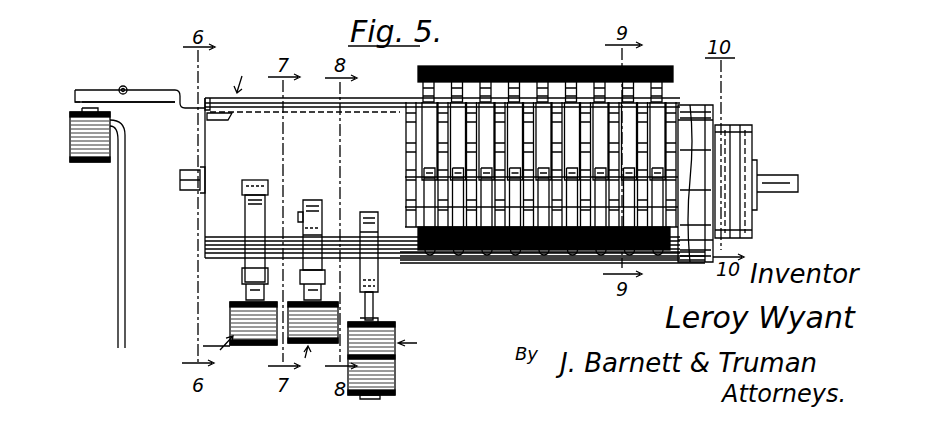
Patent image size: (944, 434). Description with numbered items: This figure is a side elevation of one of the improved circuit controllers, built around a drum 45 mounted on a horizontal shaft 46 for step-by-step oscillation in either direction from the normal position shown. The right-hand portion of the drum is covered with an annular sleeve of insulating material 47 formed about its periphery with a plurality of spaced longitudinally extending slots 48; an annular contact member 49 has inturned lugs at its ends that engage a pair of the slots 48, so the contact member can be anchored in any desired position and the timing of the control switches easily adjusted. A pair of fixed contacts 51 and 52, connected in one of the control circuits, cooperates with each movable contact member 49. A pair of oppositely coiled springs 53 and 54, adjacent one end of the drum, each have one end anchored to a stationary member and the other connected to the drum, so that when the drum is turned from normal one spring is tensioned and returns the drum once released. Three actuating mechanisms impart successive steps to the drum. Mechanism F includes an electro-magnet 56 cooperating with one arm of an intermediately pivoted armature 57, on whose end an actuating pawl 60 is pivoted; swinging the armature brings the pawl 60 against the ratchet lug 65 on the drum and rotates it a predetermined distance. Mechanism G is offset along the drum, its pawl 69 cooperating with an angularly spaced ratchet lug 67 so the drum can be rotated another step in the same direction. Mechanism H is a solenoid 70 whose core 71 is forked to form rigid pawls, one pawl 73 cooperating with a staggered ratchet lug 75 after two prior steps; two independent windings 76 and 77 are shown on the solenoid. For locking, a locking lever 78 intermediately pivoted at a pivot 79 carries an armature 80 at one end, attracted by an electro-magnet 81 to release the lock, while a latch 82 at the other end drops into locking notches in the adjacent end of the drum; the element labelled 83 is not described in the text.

The drum 45 is at (301, 112).
The horizontal shaft 46 is at (180, 176).
The annular sleeve of insulating material 47 is at (718, 122).
The longitudinally extending slots 48 is at (700, 123).
The annular contact member 49 is at (497, 122).
The fixed contact 51 is at (536, 84).
The fixed contact 52 is at (505, 225).
The coiled spring 53 is at (740, 128).
The coiled spring 54 is at (760, 141).
The electro-magnet 56 is at (232, 324).
The armature 57 is at (244, 284).
The actuating pawl 60 is at (255, 240).
The ratchet lug 65 is at (257, 180).
The ratchet lug 67 is at (301, 216).
The pawl 69 is at (318, 205).
The solenoid 70 is at (407, 327).
The core 71 is at (374, 308).
The rigid pawl 73 is at (375, 284).
The ratchet lug 75 is at (386, 220).
The winding 76 is at (397, 352).
The winding 77 is at (395, 375).
The locking lever 78 is at (176, 97).
The pivot 79 is at (126, 87).
The armature 80 is at (92, 100).
The electro-magnet 81 is at (70, 150).
The latch 82 is at (221, 97).
The bracket 83 is at (218, 121).